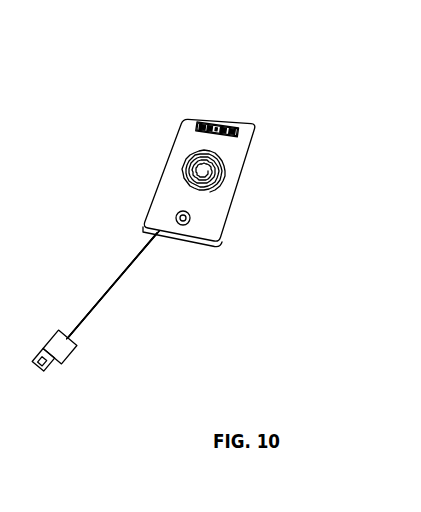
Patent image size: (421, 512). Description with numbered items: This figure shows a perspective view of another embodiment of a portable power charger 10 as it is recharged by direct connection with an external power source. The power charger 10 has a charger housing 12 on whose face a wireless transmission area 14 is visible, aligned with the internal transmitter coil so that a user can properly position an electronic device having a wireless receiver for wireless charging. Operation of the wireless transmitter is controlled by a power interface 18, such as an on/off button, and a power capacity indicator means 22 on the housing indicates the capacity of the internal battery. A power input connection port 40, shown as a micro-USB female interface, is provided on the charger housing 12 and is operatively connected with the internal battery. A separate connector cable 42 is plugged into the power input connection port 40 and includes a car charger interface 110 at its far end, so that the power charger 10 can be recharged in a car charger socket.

The portable power charger 10 is at (170, 138).
The charger housing 12 is at (243, 135).
The wireless transmission area 14 is at (208, 168).
The power interface 18 is at (185, 226).
The power capacity indicator means 22 is at (221, 120).
The power input connection port 40 is at (143, 237).
The connector cable 42 is at (105, 288).
The car charger interface 110 is at (70, 355).